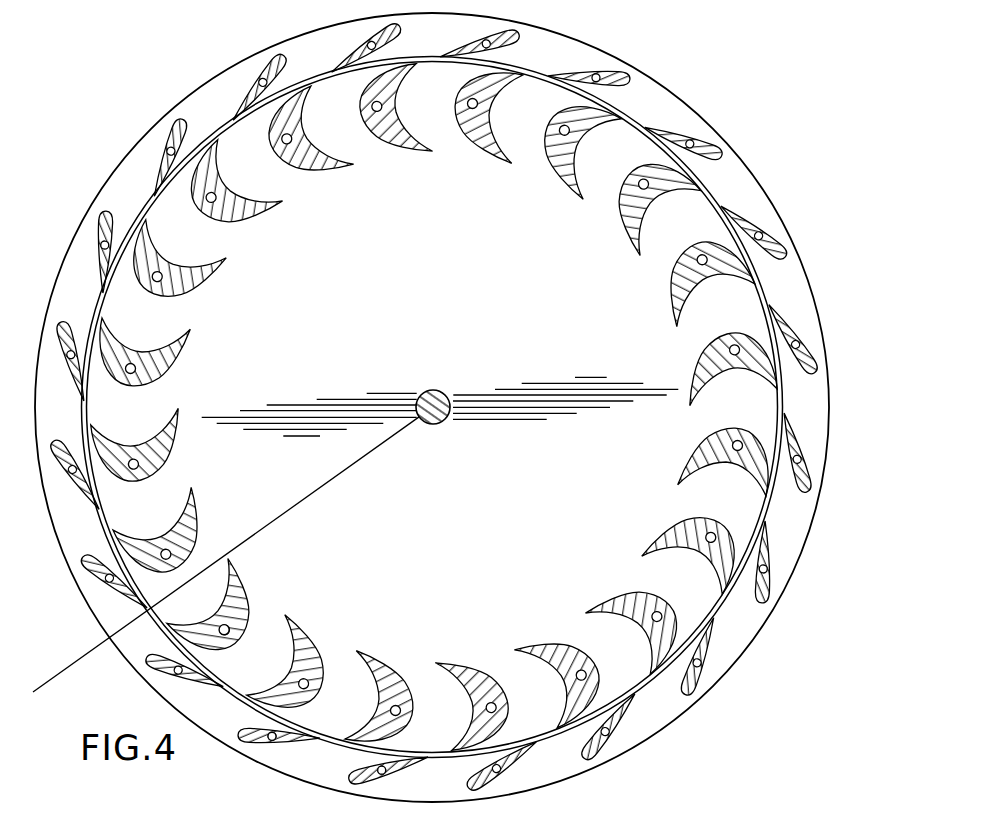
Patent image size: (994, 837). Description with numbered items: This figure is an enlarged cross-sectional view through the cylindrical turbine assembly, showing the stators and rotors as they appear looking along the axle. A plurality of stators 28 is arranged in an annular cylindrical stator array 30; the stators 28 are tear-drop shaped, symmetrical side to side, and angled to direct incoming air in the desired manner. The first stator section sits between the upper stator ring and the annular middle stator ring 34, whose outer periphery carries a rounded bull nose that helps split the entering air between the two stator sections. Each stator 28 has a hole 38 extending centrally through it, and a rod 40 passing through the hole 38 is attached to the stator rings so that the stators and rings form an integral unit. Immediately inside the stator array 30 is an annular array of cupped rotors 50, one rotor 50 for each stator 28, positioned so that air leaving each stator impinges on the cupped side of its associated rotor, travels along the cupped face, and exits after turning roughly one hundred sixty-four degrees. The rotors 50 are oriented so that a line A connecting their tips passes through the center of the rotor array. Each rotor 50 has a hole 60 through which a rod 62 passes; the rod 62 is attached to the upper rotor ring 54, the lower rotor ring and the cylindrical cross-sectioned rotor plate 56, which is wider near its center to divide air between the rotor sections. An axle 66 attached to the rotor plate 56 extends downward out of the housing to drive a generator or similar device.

The stator array 30 is at (684, 98).
The middle stator ring 34 is at (736, 638).
The stator 28 is at (434, 409).
The hole 38 is at (609, 735).
The rod 40 is at (274, 739).
The cupped rotor 50 is at (434, 407).
The hole 60 is at (135, 443).
The rod 62 is at (227, 635).
The axle 66 is at (429, 390).
The rotor plate 56 is at (443, 547).
The upper rotor ring 54 is at (613, 830).
The line A is at (70, 660).